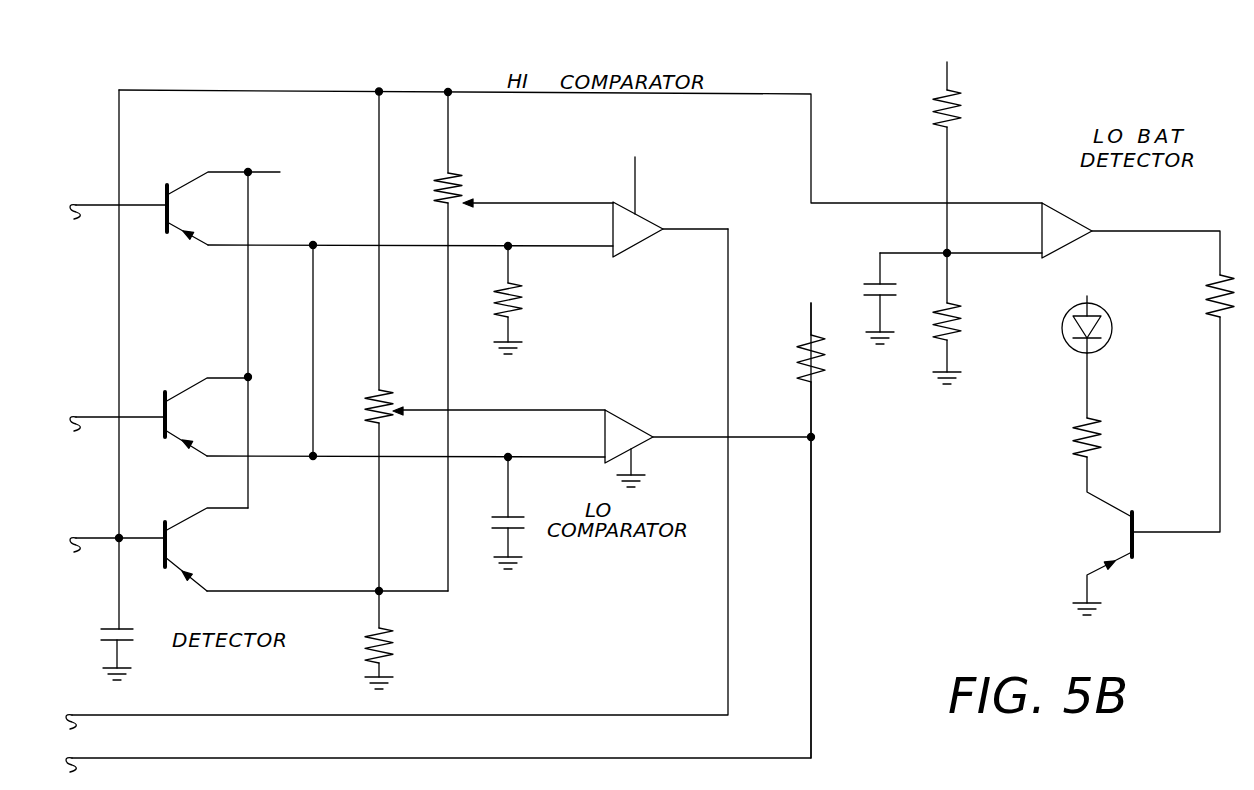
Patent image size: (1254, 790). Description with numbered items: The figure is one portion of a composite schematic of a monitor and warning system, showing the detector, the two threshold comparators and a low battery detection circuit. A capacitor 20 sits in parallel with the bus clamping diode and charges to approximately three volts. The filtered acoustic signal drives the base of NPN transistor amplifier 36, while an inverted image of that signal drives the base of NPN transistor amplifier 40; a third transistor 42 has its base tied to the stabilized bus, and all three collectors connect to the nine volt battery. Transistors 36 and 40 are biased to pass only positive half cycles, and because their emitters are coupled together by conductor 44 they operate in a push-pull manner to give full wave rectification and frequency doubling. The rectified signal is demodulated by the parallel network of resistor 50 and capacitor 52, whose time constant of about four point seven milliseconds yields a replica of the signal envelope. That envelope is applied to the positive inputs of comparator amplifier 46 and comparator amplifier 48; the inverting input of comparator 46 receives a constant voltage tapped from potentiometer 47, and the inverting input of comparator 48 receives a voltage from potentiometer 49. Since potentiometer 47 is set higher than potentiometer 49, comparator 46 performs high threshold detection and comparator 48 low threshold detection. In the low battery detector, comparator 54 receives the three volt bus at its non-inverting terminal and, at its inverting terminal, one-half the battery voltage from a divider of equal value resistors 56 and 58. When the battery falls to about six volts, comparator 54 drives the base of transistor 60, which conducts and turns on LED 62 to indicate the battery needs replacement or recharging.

The capacitor 20 is at (128, 637).
The NPN transistor amplifier 36 is at (185, 190).
The NPN transistor amplifier 40 is at (183, 391).
The third transistor 42 is at (193, 514).
The conductor 44 is at (313, 332).
The comparator amplifier 46 is at (640, 221).
The potentiometer 47 is at (465, 193).
The comparator amplifier 48 is at (628, 428).
The potentiometer 49 is at (395, 400).
The resistor 50 is at (523, 302).
The capacitor 52 is at (516, 522).
The comparator 54 is at (1072, 225).
The resistor 56 is at (962, 112).
The resistor 58 is at (961, 322).
The transistor 60 is at (1110, 500).
The LED 62 is at (1113, 327).